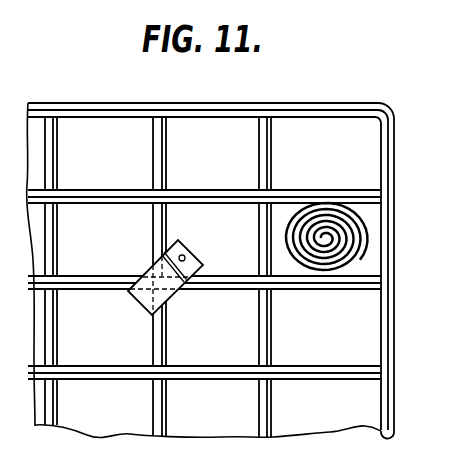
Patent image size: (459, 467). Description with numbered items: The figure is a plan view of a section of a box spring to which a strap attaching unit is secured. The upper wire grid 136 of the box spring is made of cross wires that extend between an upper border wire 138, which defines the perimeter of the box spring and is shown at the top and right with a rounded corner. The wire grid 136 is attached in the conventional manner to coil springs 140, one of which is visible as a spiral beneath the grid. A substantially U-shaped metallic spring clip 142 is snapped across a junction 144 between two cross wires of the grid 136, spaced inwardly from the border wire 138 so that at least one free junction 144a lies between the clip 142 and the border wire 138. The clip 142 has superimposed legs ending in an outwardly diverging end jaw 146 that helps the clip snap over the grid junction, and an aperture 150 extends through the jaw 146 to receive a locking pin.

The upper wire grid 136 is at (272, 406).
The upper border wire 138 is at (313, 105).
The coil springs 140 is at (367, 237).
The spring clip 142 is at (168, 274).
The junction 144 is at (143, 270).
The free junction 144a is at (165, 193).
The end jaw 146 is at (183, 243).
The aperture 150 is at (188, 258).